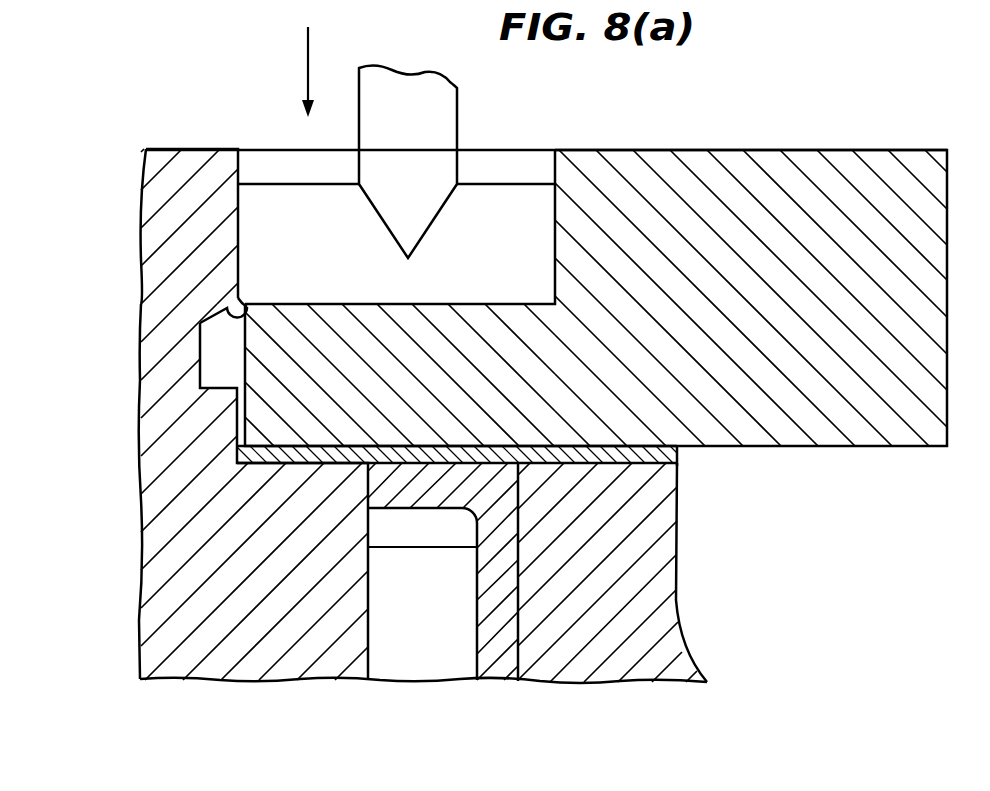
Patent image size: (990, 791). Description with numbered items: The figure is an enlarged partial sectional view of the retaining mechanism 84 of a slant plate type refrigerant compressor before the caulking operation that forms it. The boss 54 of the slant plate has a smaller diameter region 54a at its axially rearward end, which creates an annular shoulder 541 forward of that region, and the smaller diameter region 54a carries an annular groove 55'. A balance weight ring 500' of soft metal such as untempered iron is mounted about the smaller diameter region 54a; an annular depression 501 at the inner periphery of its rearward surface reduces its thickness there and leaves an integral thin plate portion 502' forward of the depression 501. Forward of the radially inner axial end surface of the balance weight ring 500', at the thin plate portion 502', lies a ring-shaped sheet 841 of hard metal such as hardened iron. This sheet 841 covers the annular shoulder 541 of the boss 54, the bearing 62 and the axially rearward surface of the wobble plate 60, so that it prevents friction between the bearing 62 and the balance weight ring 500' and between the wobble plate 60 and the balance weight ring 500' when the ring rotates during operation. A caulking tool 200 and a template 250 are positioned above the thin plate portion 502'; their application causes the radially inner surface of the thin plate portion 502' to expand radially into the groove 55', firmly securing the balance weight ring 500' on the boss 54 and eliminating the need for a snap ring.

The smaller diameter region 54a is at (194, 158).
The boss 54 is at (336, 665).
The annular groove 55' is at (244, 279).
The caulking tool 200 is at (455, 114).
The template 250 is at (507, 183).
The annular depression 501 is at (357, 268).
The retaining mechanism 84 is at (451, 303).
The balance weight ring 500' is at (751, 342).
The thin plate portion 502' is at (374, 431).
The ring-shaped sheet 841 is at (679, 463).
The annular shoulder 541 is at (333, 464).
The bearing 62 is at (432, 668).
The wobble plate 60 is at (600, 672).